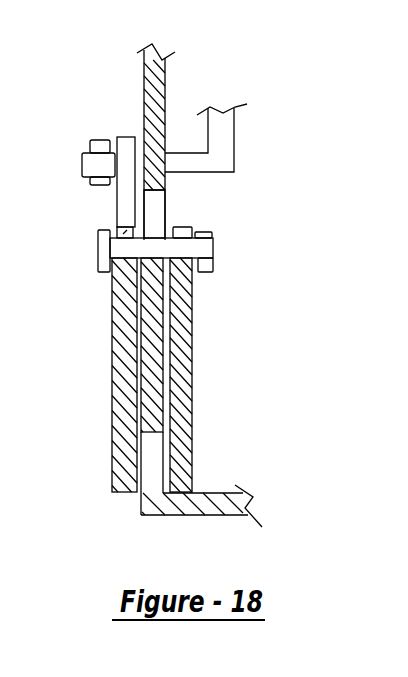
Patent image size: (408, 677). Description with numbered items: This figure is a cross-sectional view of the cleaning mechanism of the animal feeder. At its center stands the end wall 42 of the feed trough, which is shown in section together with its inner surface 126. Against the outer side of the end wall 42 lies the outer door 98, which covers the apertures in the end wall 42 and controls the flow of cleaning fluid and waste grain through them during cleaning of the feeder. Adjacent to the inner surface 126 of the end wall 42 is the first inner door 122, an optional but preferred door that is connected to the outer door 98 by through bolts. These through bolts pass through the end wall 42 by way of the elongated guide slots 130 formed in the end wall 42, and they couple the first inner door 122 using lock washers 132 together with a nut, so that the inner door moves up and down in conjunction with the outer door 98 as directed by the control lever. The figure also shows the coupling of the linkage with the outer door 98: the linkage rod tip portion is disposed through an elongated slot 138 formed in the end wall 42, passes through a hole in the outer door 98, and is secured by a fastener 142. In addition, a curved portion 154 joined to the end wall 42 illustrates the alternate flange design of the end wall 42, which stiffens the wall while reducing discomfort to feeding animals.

The end wall 42 is at (143, 108).
The outer door 98 is at (112, 408).
The first inner door 122 is at (193, 348).
The inner surface 126 is at (168, 82).
The elongated guide slots 130 is at (157, 210).
The lock washers 132 is at (210, 272).
The elongated slot 138 is at (195, 177).
The fastener 142 is at (104, 186).
The curved portion 154 is at (212, 237).